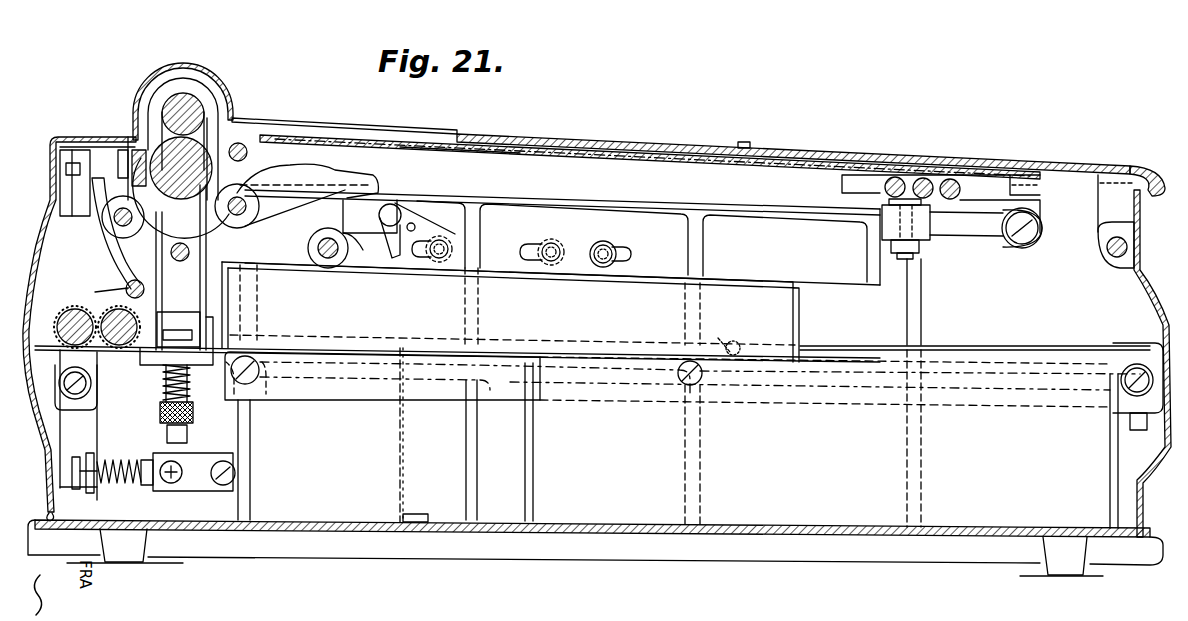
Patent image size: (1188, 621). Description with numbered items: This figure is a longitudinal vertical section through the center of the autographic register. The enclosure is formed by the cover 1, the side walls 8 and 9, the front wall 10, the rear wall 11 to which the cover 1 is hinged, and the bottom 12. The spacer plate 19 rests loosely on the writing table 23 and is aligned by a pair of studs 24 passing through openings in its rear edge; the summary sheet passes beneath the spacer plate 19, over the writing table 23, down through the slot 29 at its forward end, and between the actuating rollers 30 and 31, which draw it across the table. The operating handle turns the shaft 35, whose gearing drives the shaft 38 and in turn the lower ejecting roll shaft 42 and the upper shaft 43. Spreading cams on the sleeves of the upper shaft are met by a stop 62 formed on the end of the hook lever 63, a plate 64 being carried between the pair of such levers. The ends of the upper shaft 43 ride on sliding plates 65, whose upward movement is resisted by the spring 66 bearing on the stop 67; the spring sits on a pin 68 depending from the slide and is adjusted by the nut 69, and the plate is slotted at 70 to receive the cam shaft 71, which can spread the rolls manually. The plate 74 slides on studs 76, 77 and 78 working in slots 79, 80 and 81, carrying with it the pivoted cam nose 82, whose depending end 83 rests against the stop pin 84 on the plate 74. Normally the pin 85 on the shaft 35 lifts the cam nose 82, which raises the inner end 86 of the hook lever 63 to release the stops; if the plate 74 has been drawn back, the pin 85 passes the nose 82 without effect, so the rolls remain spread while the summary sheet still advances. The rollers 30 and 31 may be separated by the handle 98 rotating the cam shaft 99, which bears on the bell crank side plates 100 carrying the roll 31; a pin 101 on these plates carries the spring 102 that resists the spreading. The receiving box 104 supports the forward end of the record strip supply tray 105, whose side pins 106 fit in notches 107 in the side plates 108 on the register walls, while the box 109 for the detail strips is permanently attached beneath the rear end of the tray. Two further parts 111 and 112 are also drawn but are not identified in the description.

The cover 1 is at (541, 135).
The side wall 8 is at (1063, 184).
The side wall 9 is at (44, 228).
The front wall 10 is at (50, 204).
The rear wall 11 is at (1140, 294).
The bottom 12 is at (348, 522).
The spacer plate 19 is at (620, 159).
The writing table 23 is at (513, 157).
The studs 24 is at (743, 143).
The slot 29 is at (268, 134).
The actuating roller 30 is at (168, 320).
The actuating roller 31 is at (62, 310).
The shaft 35 is at (315, 244).
The shaft 38 is at (249, 190).
The lower ejecting roll shaft 42 is at (210, 134).
The upper shaft 43 is at (196, 100).
The stop 62 is at (142, 125).
The hook lever 63 is at (160, 227).
The plate 64 is at (130, 148).
The sliding plate 65 is at (193, 274).
The spring 66 is at (163, 380).
The stop 67 is at (206, 321).
The pin 68 is at (167, 432).
The nut 69 is at (160, 412).
The slot 70 is at (179, 268).
The cam shaft 71 is at (170, 259).
The plate 74 is at (501, 257).
The stud 76 is at (442, 260).
The stud 77 is at (554, 264).
The stud 78 is at (618, 247).
The slot 79 is at (424, 261).
The slot 80 is at (532, 262).
The slot 81 is at (632, 252).
The pivoted cam nose 82 is at (345, 214).
The depending end 83 is at (394, 259).
The stop pin 84 is at (408, 224).
The pin 85 is at (365, 252).
The inner end 86 is at (363, 181).
The handle 98 is at (104, 248).
The cam shaft 99 is at (126, 283).
The bell crank side plates 100 is at (98, 294).
The pin 101 is at (176, 466).
The spring 102 is at (129, 488).
The receiving box 104 is at (404, 486).
The record strip supply tray 105 is at (740, 294).
The side pins 106 is at (732, 342).
The notches 107 is at (745, 344).
The side plates 108 is at (354, 396).
The box 109 is at (832, 493).
The guide 111 is at (118, 152).
The stud 112 is at (137, 216).